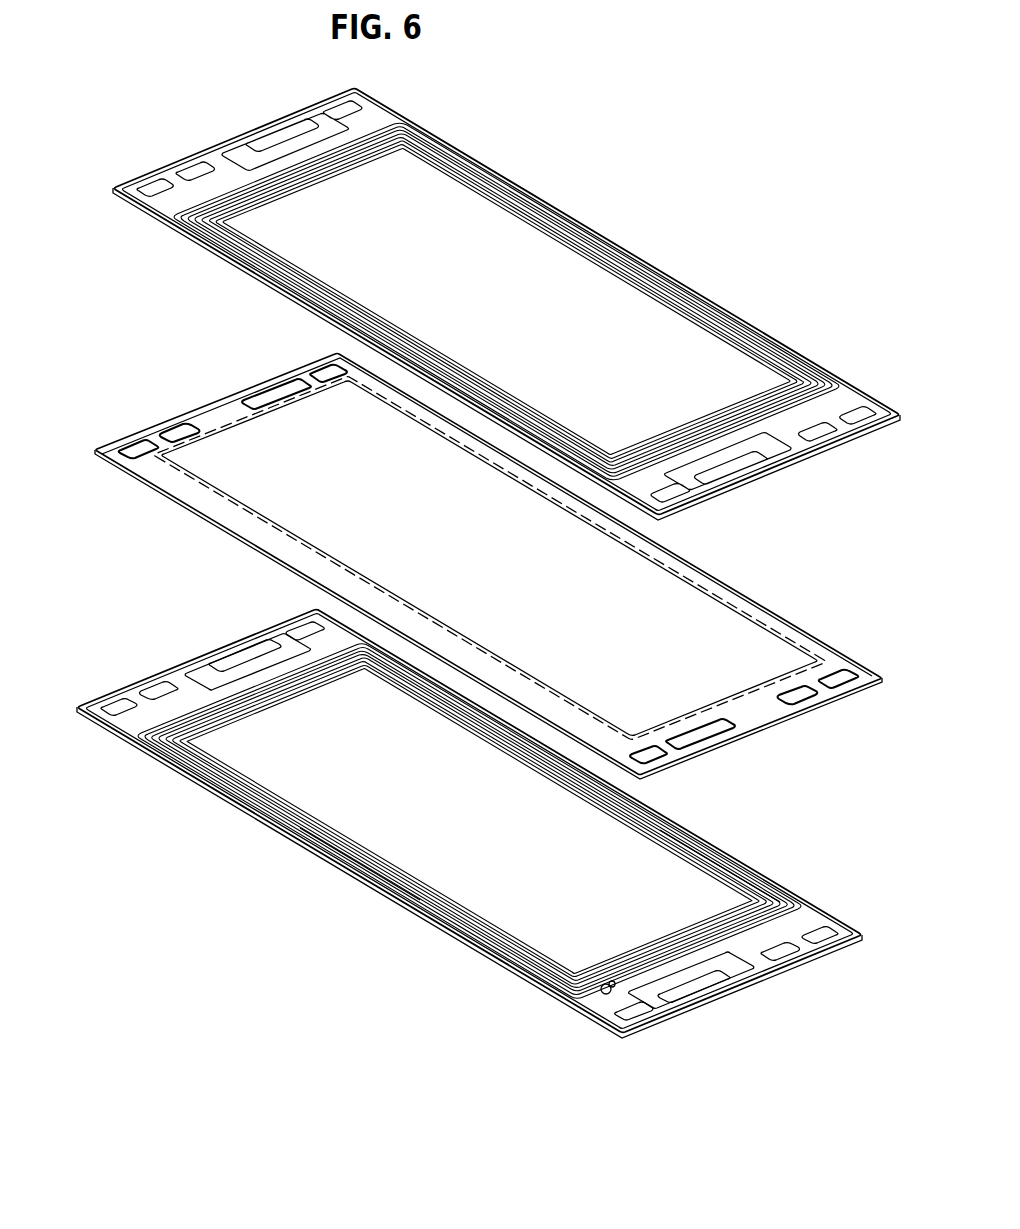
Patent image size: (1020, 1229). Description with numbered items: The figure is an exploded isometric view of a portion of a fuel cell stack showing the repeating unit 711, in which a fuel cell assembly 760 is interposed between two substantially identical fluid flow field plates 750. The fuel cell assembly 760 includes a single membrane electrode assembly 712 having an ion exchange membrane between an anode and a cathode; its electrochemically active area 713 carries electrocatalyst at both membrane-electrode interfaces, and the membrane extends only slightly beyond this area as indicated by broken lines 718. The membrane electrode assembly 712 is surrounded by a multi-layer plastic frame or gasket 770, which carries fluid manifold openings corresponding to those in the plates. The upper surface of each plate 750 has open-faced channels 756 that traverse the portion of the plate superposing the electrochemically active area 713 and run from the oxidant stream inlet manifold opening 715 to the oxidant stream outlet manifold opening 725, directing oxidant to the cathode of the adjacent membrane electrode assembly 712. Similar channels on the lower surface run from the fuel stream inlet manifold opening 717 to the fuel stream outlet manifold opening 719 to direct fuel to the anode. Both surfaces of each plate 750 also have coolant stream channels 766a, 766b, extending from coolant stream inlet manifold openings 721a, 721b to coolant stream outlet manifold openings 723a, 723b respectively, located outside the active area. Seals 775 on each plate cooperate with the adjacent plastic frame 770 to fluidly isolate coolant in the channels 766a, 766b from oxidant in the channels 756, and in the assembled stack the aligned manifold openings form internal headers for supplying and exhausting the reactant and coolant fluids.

The repeating unit 711 is at (88, 182).
The fluid flow field plate 750 is at (140, 207).
The fuel cell assembly 760 is at (812, 626).
The plastic frame 770 is at (830, 690).
The membrane electrode assembly 712 is at (718, 597).
The electrochemically active area 713 is at (727, 632).
The broken lines 718 is at (665, 598).
The oxidant stream inlet manifold opening 715 is at (160, 690).
The fuel stream inlet manifold opening 717 is at (257, 648).
The fuel stream outlet manifold opening 719 is at (693, 995).
The coolant stream inlet manifold opening 721a is at (105, 718).
The coolant stream inlet manifold opening 721b is at (305, 630).
The coolant stream outlet manifold opening 723a is at (667, 1027).
The coolant stream outlet manifold opening 723b is at (850, 912).
The oxidant stream outlet manifold opening 725 is at (786, 958).
The open-faced channels 756 is at (231, 757).
The coolant stream channels 766a is at (368, 867).
The coolant stream channels 766b is at (732, 857).
The seals 775 is at (605, 993).